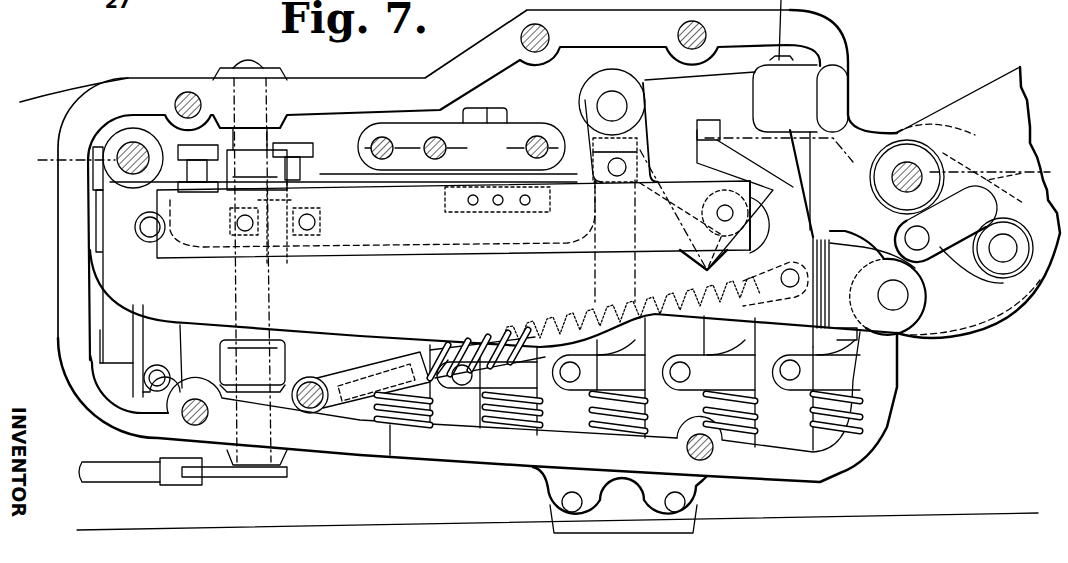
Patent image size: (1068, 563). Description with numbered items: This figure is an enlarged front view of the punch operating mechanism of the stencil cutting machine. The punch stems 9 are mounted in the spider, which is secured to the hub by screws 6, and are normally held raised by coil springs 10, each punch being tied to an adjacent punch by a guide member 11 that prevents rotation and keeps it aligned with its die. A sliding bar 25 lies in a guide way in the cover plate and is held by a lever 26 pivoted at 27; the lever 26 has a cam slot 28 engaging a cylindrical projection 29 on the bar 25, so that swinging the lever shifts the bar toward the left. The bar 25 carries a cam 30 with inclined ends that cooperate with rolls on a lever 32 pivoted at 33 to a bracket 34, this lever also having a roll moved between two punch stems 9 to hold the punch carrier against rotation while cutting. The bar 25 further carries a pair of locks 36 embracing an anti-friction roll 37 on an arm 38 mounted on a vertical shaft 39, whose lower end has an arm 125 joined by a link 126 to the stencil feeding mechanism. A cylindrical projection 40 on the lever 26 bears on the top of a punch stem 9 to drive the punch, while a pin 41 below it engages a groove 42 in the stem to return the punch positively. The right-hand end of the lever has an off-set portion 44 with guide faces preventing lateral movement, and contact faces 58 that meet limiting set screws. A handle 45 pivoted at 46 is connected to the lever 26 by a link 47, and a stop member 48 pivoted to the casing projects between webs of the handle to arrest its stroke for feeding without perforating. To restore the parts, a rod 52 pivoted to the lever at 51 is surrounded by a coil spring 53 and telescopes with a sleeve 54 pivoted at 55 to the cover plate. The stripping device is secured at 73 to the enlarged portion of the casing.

The screws 6 is at (534, 167).
The punch stems 9 is at (292, 148).
The coil springs 10 is at (742, 412).
The guide member 11 is at (648, 365).
The sliding bar 25 is at (402, 241).
The lever 26 is at (586, 311).
The pivot 27 is at (130, 160).
The cam slot 28 is at (640, 143).
The cylindrical projection 29 is at (704, 232).
The cam 30 is at (489, 205).
The lever 32 is at (453, 198).
The pivot 33 is at (488, 108).
The bracket 34 is at (461, 146).
The locks 36 is at (245, 237).
The anti-friction roll 37 is at (274, 222).
The arm 38 is at (250, 180).
The vertical shaft 39 is at (247, 60).
The cylindrical projection 40 is at (597, 100).
The pin 41 is at (624, 168).
The groove 42 is at (160, 186).
The off-set portion 44 is at (832, 100).
The handle 45 is at (958, 100).
The pivot 46 is at (892, 178).
The link 47 is at (991, 265).
The stop member 48 is at (953, 217).
The pivot 51 is at (790, 288).
The rod 52 is at (442, 378).
The coil spring 53 is at (470, 345).
The sleeve 54 is at (396, 360).
The pivot 55 is at (312, 407).
The contact faces 58 is at (850, 332).
The securing point 73 is at (585, 503).
The arm 125 is at (234, 490).
The link 126 is at (140, 486).